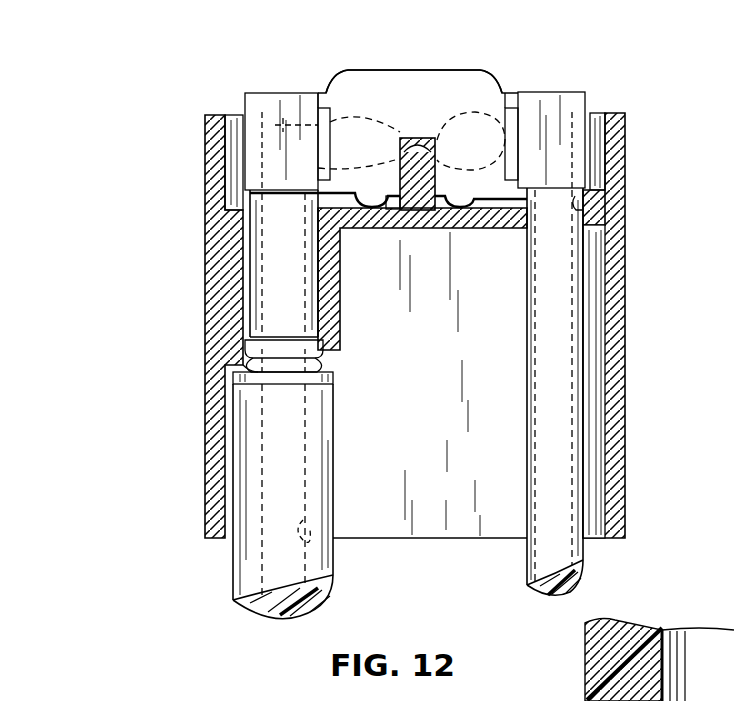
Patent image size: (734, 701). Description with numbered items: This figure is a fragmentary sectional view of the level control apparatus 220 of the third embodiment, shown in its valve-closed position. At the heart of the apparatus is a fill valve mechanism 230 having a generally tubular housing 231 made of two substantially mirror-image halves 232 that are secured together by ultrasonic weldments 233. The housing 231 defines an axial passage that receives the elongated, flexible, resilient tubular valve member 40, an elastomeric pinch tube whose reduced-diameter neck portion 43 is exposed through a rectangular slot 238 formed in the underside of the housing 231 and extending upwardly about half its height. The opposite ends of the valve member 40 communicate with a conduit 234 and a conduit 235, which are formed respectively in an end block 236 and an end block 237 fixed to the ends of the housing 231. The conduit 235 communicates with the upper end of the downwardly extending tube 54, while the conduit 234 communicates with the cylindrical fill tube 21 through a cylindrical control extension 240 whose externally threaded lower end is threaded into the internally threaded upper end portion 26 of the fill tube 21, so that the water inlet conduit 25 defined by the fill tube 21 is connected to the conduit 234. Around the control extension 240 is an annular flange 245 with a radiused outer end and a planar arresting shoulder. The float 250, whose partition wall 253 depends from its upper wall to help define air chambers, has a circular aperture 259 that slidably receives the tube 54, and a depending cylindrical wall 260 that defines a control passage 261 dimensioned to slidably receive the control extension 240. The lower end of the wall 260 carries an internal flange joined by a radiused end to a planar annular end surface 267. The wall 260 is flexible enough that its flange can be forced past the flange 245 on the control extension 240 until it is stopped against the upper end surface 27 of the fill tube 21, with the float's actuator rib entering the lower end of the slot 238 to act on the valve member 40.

The level control apparatus 220 is at (186, 69).
The end block 236 is at (243, 116).
The float 250 is at (626, 311).
The end block 237 is at (640, 96).
The cylindrical wall 260 is at (341, 299).
The ultrasonic weldments 233 is at (372, 208).
The conduit 234 is at (268, 126).
The conduit 235 is at (548, 121).
The neck portion 43 is at (418, 73).
The housing 231 is at (352, 88).
The mirror-image halves 232 is at (503, 92).
The fill valve mechanism 230 is at (530, 60).
The tubular valve member 40 is at (362, 110).
The rectangular slot 238 is at (437, 138).
The circular aperture 259 is at (585, 206).
The control extension 240 is at (262, 268).
The annular end surface 267 is at (248, 346).
The upper end surface 27 is at (326, 363).
The internally threaded upper end portion 26 is at (333, 386).
The annular flange 245 is at (278, 378).
The fill tube 21 is at (330, 555).
The water inlet conduit 25 is at (305, 530).
The downwardly extending tube 54 is at (528, 561).
The partition wall 253 is at (472, 356).
The control passage 261 is at (665, 666).